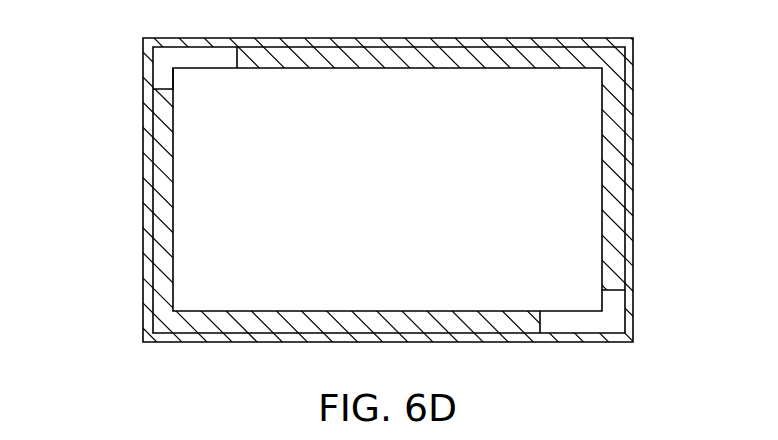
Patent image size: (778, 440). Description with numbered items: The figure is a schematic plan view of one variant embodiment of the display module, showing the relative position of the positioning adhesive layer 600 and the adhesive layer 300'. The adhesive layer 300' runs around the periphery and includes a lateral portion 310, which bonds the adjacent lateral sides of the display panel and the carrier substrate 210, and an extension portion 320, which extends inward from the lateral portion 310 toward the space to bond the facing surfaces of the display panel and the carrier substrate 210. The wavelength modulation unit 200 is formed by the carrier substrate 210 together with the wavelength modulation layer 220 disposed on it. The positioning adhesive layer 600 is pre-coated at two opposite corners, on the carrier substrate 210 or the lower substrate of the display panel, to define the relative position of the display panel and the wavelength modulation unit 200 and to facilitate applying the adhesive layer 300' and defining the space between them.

The positioning adhesive layer 600 is at (218, 58).
The adhesive layer 300' is at (207, 190).
The lateral portion 310 is at (145, 168).
The extension portion 320 is at (160, 122).
The wavelength modulation unit 200 is at (693, 145).
The carrier substrate 210 is at (623, 167).
The wavelength modulation layer 220 is at (588, 117).